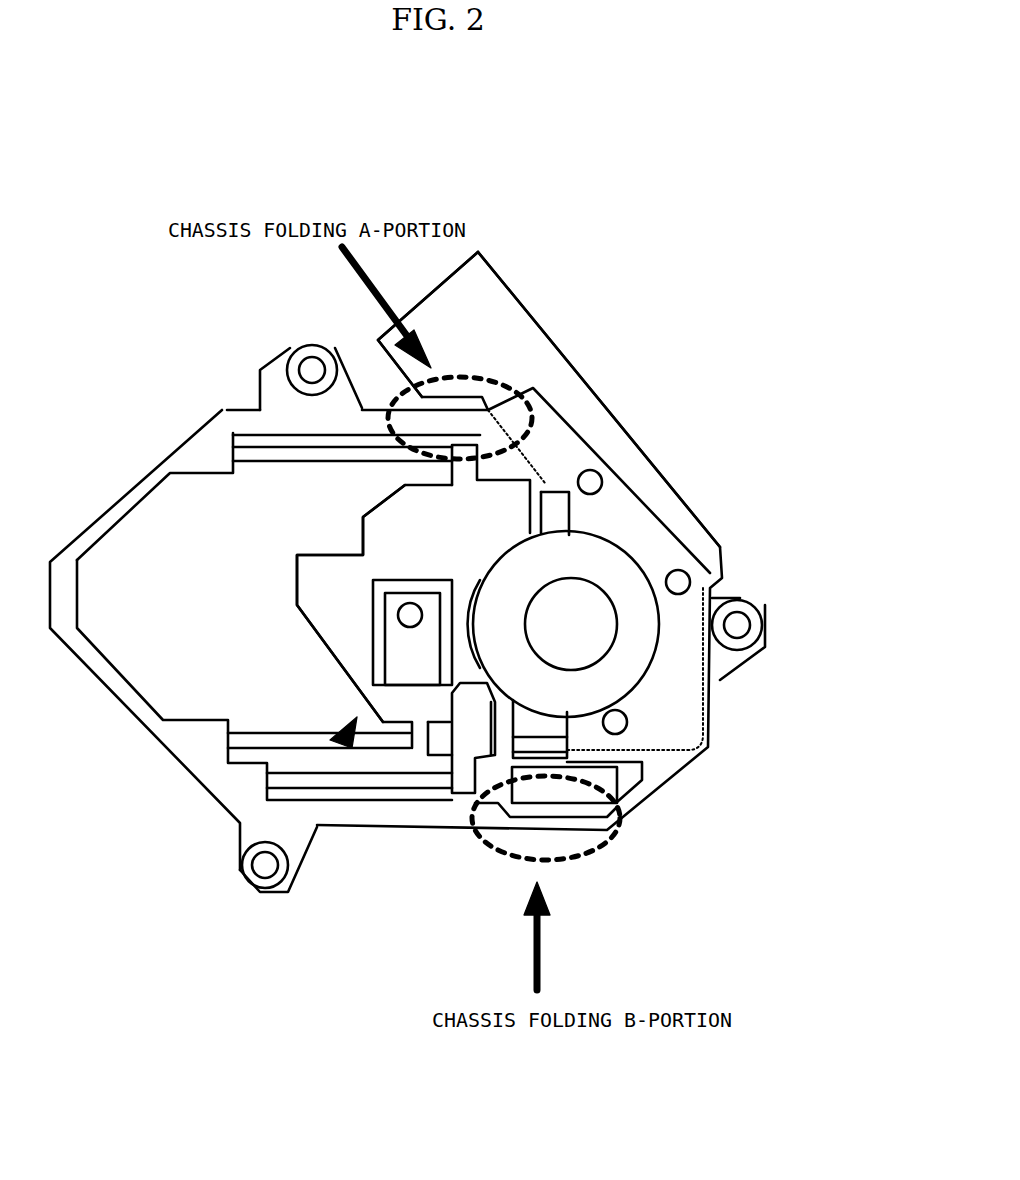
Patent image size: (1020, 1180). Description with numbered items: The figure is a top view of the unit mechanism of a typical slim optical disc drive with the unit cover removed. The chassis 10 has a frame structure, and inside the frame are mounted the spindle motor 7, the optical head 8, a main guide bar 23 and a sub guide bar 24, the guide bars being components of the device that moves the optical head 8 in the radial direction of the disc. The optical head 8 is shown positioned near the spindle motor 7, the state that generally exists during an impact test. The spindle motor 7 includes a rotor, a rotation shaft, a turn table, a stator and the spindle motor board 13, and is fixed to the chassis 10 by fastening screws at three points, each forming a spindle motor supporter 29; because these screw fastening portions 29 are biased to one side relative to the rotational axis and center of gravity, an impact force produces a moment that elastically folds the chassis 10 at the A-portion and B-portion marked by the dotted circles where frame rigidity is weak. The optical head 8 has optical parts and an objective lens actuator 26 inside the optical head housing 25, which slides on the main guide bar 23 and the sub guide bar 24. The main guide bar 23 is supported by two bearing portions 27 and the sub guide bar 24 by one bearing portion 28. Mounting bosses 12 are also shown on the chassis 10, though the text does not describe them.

The spindle motor 7 is at (605, 560).
The optical head 8 is at (345, 730).
The chassis 10 is at (210, 440).
The mounting boss 12 is at (297, 347).
The spindle motor board 13 is at (520, 353).
The main guide bar 23 is at (280, 740).
The sub guide bar 24 is at (272, 450).
The optical head housing 25 is at (403, 560).
The objective lens actuator 26 is at (405, 655).
The bearing portion 27 is at (422, 745).
The bearing portion 28 is at (450, 463).
The spindle motor supporter 29 is at (600, 482).